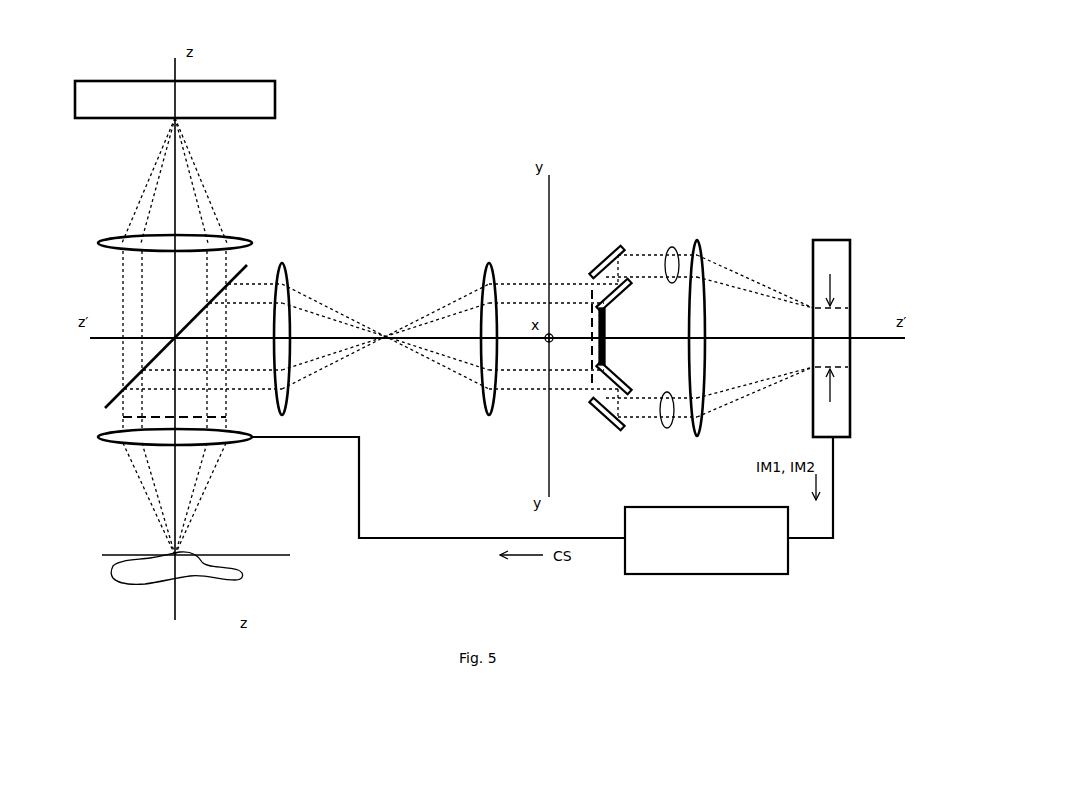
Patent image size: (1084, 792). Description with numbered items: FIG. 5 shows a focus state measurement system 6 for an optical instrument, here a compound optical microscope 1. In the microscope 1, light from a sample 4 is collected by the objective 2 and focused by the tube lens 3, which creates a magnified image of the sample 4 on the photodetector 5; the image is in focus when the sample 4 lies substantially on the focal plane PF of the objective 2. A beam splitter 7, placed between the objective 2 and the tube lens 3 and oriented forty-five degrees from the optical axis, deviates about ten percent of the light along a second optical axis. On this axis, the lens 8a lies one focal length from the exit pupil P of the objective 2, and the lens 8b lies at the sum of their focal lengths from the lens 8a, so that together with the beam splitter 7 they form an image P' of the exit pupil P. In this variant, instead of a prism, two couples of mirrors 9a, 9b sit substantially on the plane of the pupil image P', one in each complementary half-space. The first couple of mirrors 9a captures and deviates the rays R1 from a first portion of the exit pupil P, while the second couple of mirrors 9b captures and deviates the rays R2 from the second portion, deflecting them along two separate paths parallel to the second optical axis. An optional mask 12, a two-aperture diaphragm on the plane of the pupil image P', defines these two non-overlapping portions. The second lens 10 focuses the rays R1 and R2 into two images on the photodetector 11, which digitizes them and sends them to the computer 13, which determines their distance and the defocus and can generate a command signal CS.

The compound optical microscope 1 is at (88, 64).
The objective 2 is at (110, 443).
The tube lens 3 is at (110, 237).
The sample 4 is at (112, 572).
The photodetector 5 is at (136, 118).
The system for measuring the focus state 6 is at (645, 175).
The beam splitter 7 is at (106, 401).
The first lens 8a is at (286, 274).
The first lens 8b is at (484, 272).
The first couple of mirrors 9a is at (602, 433).
The second couple of mirrors 9b is at (606, 243).
The second lens 10 is at (700, 243).
The further photodetector 11 is at (812, 260).
The mask 12 is at (606, 331).
The computer 13 is at (707, 507).
The exit pupil P is at (137, 429).
The image of the exit pupil P' is at (580, 324).
The focal plane PF is at (274, 557).
The rays R1 is at (665, 429).
The rays R2 is at (668, 248).